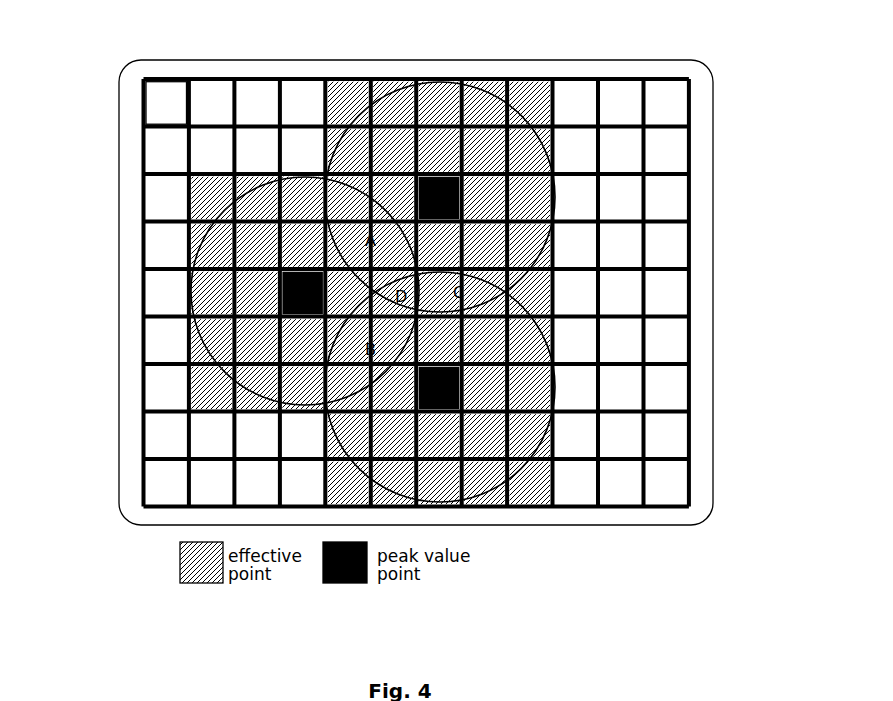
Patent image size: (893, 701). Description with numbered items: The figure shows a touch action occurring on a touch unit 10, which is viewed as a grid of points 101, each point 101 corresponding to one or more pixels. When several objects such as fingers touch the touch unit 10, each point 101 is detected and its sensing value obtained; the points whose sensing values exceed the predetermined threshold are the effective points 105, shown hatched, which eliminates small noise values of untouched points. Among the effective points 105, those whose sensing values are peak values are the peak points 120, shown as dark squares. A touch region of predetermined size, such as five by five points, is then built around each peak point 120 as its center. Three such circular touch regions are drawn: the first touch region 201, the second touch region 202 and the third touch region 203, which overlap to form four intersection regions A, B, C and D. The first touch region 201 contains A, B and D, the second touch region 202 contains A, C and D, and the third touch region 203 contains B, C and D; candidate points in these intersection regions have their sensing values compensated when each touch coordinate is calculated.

The touch unit 10 is at (713, 170).
The point 101 is at (172, 88).
The effective point 105 is at (190, 382).
The peak point 120 is at (285, 290).
The first touch region 201 is at (187, 203).
The second touch region 202 is at (492, 87).
The third touch region 203 is at (483, 493).